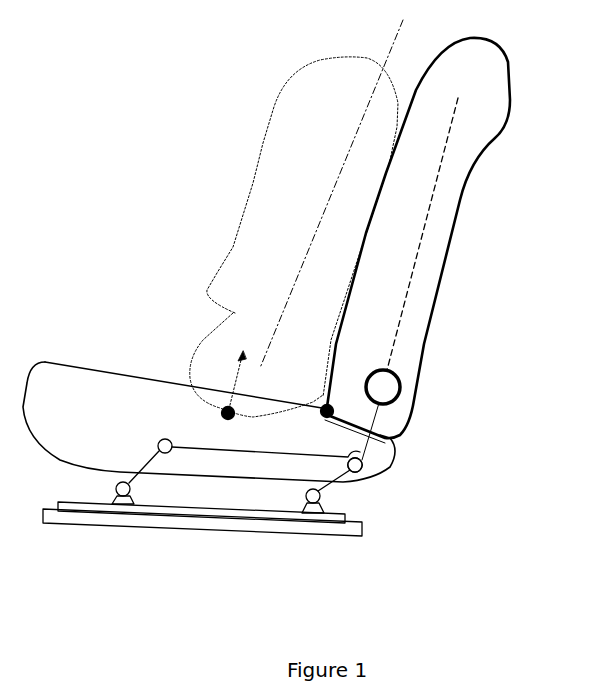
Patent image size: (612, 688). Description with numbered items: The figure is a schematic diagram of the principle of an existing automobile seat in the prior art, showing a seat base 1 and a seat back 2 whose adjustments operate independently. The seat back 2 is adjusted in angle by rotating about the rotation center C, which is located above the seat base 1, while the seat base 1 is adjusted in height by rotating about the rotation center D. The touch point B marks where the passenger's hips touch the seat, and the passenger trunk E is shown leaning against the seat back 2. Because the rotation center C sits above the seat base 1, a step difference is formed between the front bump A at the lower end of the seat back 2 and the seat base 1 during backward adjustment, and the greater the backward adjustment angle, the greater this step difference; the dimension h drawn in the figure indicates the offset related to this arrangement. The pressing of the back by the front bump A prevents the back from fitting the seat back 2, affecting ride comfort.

The seat base 1 is at (92, 472).
The seat back 2 is at (493, 47).
The front bump at the lower end of the seat back A is at (327, 411).
The touch point where the passenger's hips touch the seat B is at (228, 413).
The rotation center when adjusting seat back C is at (220, 343).
The rotation center when adjusting seat base D is at (363, 467).
The passenger trunk E is at (330, 82).
The height offset h is at (231, 382).